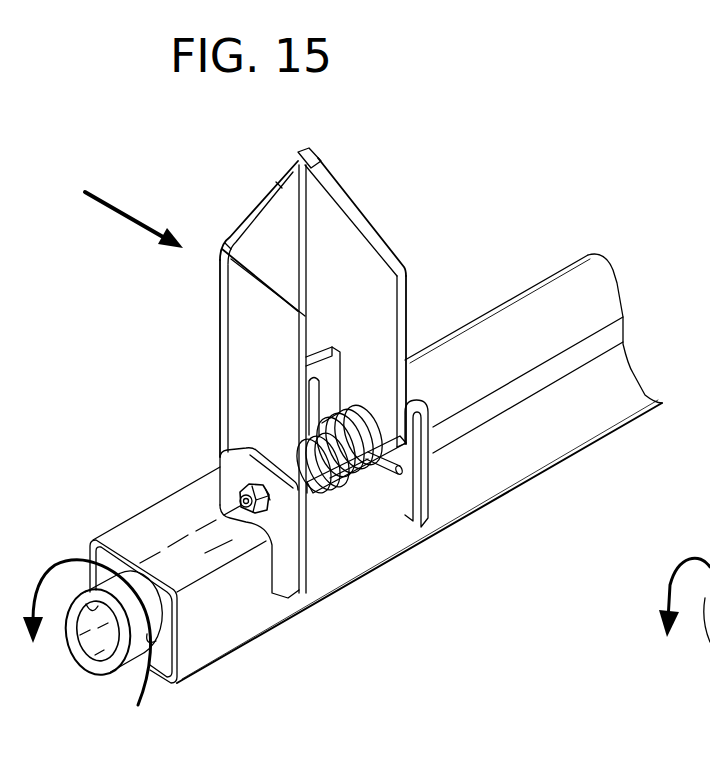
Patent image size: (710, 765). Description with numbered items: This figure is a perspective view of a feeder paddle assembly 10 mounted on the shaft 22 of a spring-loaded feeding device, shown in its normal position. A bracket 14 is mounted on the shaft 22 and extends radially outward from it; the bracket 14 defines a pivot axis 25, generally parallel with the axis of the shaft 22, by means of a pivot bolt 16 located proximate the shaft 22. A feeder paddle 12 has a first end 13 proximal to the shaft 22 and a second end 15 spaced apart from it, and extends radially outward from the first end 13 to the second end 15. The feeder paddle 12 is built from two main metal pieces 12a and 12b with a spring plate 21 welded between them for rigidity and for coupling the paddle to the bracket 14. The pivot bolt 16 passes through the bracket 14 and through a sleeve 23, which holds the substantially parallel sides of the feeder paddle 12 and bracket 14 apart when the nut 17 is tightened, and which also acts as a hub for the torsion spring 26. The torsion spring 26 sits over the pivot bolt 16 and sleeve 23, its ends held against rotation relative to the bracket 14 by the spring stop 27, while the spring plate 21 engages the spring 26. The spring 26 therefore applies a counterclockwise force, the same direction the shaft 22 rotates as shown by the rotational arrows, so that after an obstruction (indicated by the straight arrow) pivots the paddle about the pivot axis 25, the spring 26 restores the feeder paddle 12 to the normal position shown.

The feeder paddle assembly 10 is at (206, 344).
The feeder paddle 12 is at (346, 170).
The main metal piece 12a is at (405, 273).
The main metal piece 12b is at (220, 360).
The first end 13 is at (206, 454).
The bracket 14 is at (417, 417).
The second end 15 is at (324, 145).
The pivot bolt 16 is at (245, 507).
The nut 17 is at (268, 494).
The spring plate 21 is at (330, 377).
The shaft 22 is at (592, 277).
The sleeve 23 is at (346, 455).
The pivot axis 25 is at (168, 533).
The torsion spring 26 is at (318, 463).
The spring stop 27 is at (360, 508).